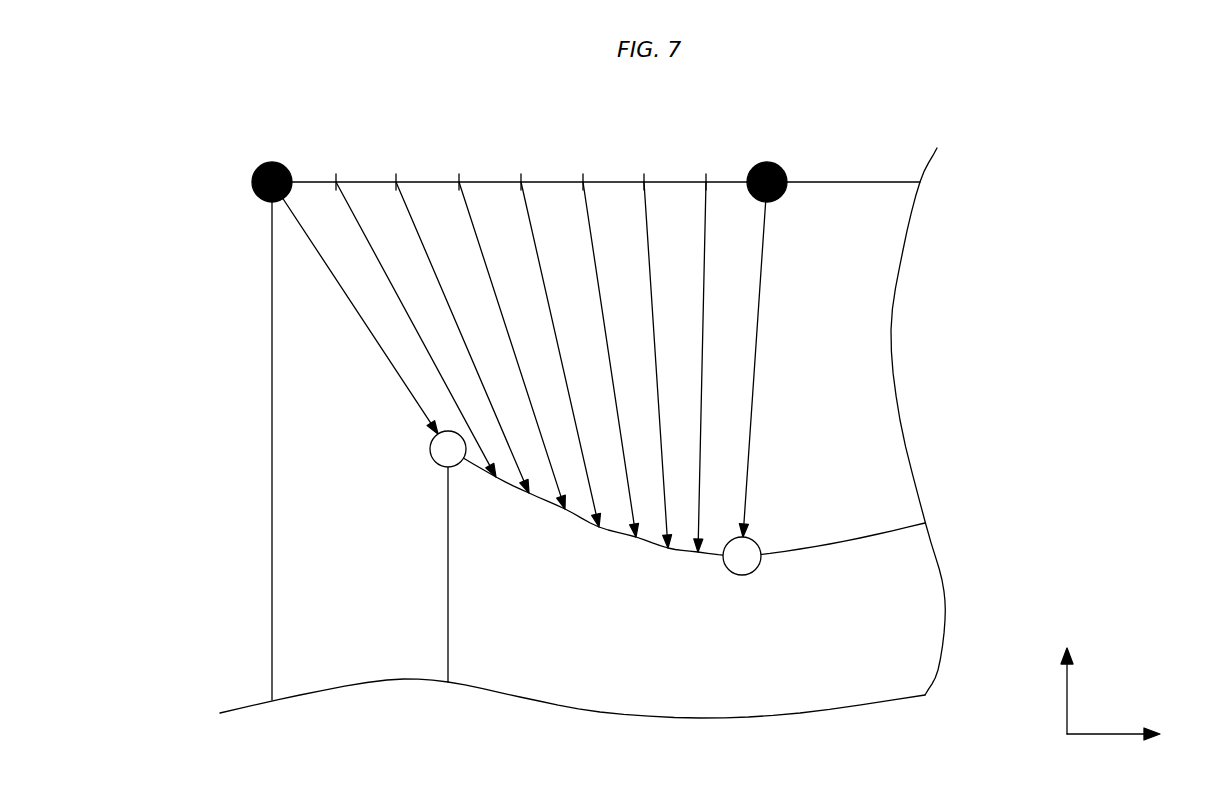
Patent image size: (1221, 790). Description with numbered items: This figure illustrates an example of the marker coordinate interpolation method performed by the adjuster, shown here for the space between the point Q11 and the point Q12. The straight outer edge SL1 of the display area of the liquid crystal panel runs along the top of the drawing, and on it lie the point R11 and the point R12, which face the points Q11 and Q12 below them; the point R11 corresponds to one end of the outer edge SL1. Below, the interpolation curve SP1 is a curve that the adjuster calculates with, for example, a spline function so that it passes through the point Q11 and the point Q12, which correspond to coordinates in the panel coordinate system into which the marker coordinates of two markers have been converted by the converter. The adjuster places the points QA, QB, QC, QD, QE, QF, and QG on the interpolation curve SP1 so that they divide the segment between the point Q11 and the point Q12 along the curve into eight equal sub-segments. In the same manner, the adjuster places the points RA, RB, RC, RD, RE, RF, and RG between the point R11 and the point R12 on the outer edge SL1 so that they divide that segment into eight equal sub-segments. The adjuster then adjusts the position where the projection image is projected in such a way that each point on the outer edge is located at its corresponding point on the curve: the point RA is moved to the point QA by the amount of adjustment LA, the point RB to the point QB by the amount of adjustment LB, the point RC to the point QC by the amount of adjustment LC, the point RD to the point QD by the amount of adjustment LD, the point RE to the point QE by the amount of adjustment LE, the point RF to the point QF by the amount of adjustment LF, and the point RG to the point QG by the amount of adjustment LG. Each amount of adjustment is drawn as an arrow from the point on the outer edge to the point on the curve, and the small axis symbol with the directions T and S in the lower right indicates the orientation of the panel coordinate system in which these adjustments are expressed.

The point R11 is at (274, 162).
The point R12 is at (768, 162).
The point RA is at (335, 170).
The point RB is at (396, 170).
The point RC is at (459, 170).
The point RD is at (521, 170).
The point RE is at (582, 170).
The point RF is at (644, 170).
The point RG is at (706, 170).
The amount of adjustment LA is at (413, 324).
The amount of adjustment LB is at (460, 331).
The amount of adjustment LC is at (510, 339).
The amount of adjustment LD is at (555, 348).
The amount of adjustment LE is at (602, 353).
The amount of adjustment LF is at (643, 358).
The amount of adjustment LG is at (686, 360).
The point QA is at (493, 488).
The point QB is at (529, 496).
The point QC is at (564, 523).
The point QD is at (599, 530).
The point QE is at (634, 549).
The point QF is at (668, 552).
The point QG is at (699, 562).
The point Q11 is at (443, 466).
The point Q12 is at (751, 573).
The outer edge SL1 is at (873, 182).
The interpolation curve SP1 is at (846, 543).
The T axis T is at (1066, 676).
The S axis S is at (1125, 735).